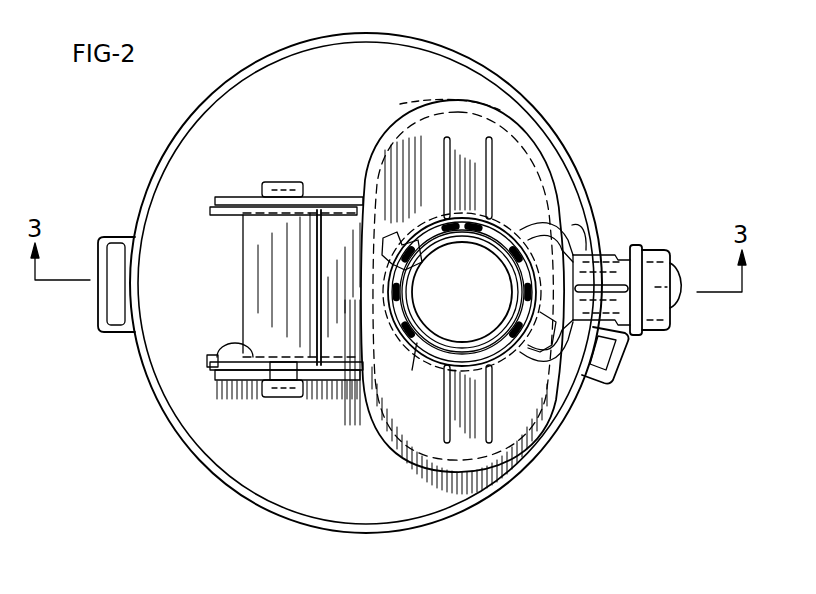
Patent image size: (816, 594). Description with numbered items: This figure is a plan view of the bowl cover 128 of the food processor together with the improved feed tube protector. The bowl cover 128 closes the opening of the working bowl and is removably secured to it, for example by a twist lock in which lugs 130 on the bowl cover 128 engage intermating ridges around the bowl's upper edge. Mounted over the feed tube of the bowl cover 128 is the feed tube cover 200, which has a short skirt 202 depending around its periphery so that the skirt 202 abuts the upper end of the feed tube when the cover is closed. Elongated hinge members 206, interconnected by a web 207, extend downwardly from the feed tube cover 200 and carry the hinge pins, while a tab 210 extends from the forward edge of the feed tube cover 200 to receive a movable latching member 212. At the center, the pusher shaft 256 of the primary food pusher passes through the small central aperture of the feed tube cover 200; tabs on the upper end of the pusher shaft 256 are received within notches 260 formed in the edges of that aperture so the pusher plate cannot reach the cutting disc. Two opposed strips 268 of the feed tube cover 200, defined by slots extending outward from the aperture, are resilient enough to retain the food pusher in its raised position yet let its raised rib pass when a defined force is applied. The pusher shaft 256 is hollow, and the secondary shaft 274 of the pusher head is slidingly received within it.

The bowl cover 128 is at (418, 60).
The lugs 130 is at (113, 333).
The feed tube cover 200 is at (503, 171).
The skirt 202 is at (477, 112).
The elongated hinge members 206 is at (346, 226).
The web 207 is at (250, 240).
The tab 210 is at (677, 280).
The movable latching member 212 is at (655, 247).
The pusher shaft 256 is at (513, 240).
The notches 260 is at (393, 243).
The strips 268 is at (457, 170).
The secondary shaft 274 is at (400, 368).